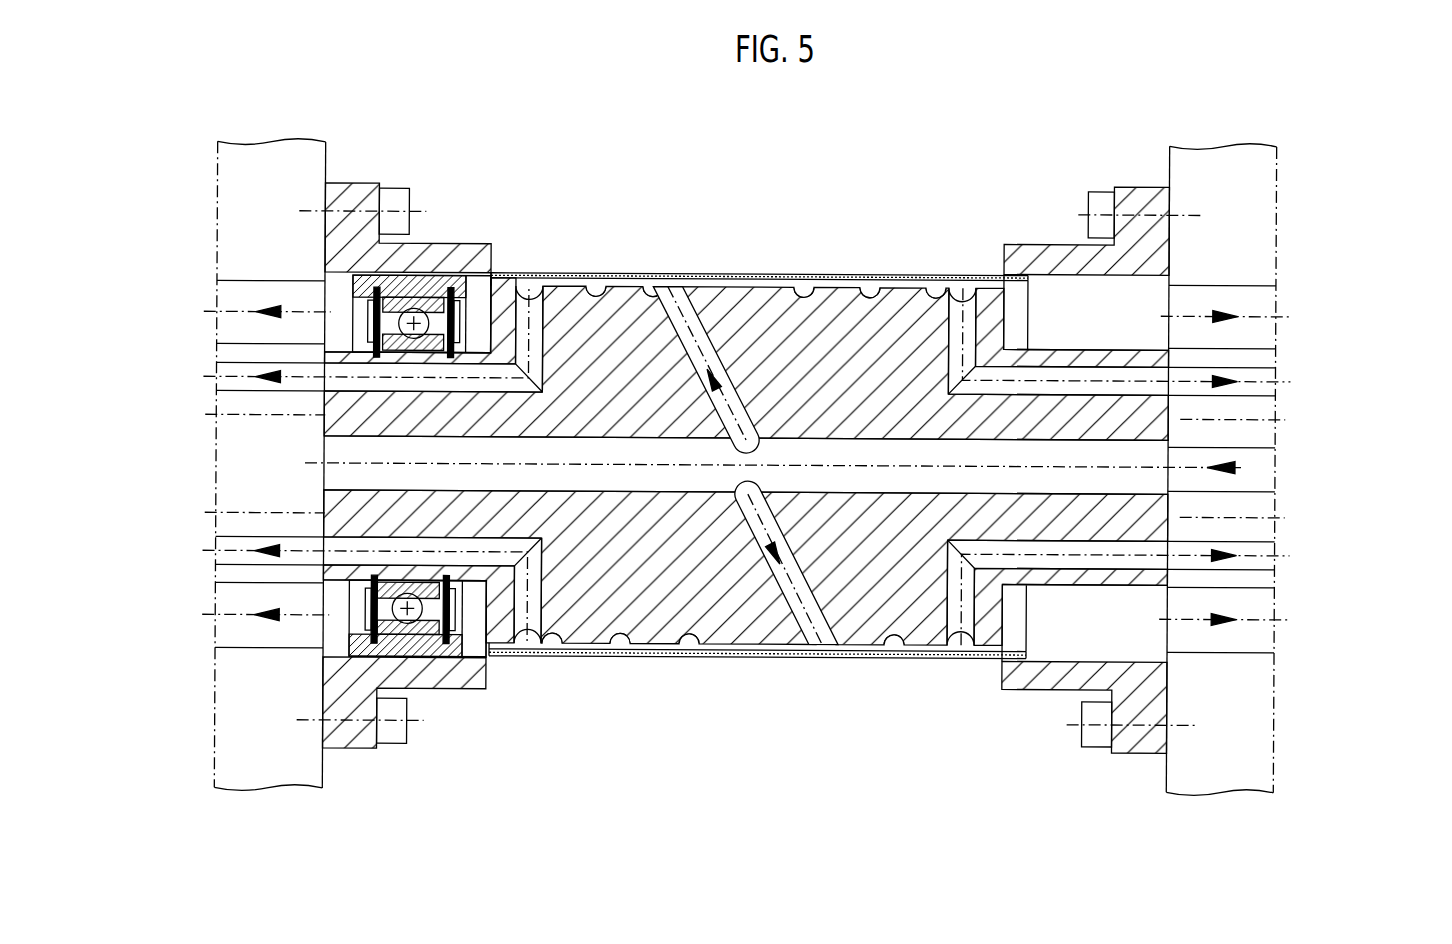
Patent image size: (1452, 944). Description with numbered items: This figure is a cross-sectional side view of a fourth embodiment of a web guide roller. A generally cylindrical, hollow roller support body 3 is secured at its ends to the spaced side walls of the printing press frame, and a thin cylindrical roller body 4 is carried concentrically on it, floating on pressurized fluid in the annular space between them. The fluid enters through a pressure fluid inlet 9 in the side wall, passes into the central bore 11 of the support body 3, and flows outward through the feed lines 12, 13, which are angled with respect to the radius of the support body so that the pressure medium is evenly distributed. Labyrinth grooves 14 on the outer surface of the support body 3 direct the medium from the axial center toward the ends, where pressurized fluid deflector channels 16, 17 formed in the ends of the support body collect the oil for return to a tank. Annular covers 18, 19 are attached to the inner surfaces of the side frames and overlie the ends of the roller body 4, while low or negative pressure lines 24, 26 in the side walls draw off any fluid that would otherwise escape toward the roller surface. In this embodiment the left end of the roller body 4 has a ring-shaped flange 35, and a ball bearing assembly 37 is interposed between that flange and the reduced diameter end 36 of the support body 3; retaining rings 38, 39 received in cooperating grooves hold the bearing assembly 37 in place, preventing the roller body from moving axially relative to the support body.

The roller support body 3 is at (825, 326).
The roller body 4 is at (772, 276).
The pressure fluid inlet 9 is at (1250, 459).
The central bore 11 is at (677, 470).
The feed line 12 is at (688, 337).
The feed line 13 is at (800, 595).
The labyrinth grooves 14 is at (596, 284).
The pressurized fluid deflector channel 16 is at (243, 370).
The pressurized fluid deflector channel 17 is at (1250, 372).
The annular cover 18 is at (353, 220).
The annular cover 19 is at (1075, 256).
The low pressure line 24 is at (243, 305).
The low pressure line 26 is at (1250, 307).
The ring-shaped flange 35 is at (417, 645).
The reduced diameter end 36 is at (518, 278).
The ball bearing assembly 37 is at (473, 692).
The retaining ring 38 is at (381, 285).
The retaining ring 39 is at (492, 250).